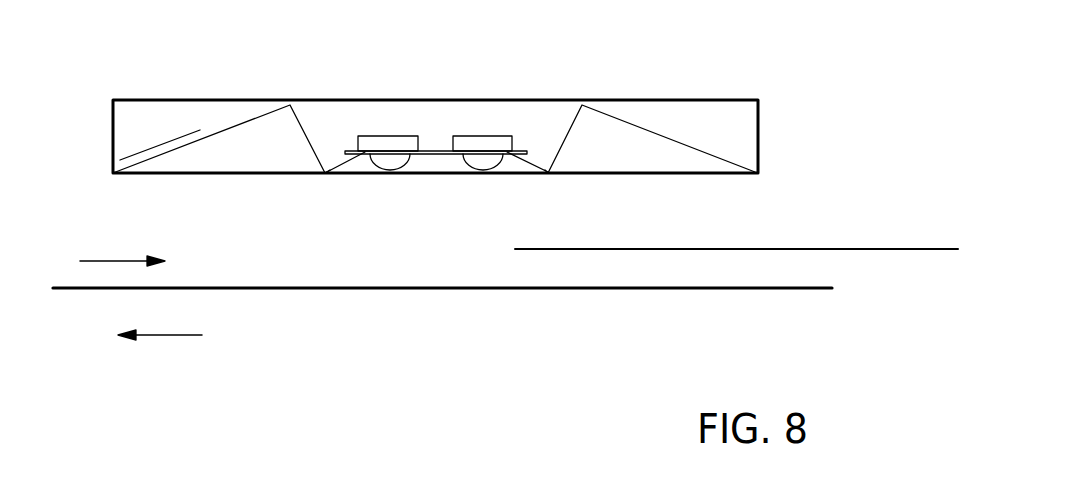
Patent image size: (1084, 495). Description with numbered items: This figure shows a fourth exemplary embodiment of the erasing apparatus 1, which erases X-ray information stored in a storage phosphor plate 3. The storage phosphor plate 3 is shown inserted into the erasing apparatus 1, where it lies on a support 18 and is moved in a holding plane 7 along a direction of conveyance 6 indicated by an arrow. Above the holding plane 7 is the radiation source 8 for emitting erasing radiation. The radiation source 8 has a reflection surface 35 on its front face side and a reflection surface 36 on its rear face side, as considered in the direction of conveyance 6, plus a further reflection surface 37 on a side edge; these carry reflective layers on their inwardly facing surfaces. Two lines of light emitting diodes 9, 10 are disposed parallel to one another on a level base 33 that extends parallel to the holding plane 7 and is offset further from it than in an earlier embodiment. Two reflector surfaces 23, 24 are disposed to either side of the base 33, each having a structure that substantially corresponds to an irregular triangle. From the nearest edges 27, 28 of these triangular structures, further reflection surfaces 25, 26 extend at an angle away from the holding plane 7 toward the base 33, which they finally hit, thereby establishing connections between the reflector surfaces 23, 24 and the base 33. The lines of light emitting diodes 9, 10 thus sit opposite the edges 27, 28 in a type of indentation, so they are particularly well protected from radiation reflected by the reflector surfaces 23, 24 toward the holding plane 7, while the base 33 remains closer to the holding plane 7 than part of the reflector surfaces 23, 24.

The erasing apparatus 1 is at (848, 180).
The storage phosphor plate 3 is at (878, 250).
The direction of conveyance 6 is at (167, 335).
The holding plane 7 is at (103, 261).
The radiation source 8 is at (553, 100).
The line of light emitting diodes 9 is at (383, 142).
The line of light emitting diodes 10 is at (500, 142).
The support 18 is at (522, 290).
The reflector surface 23 is at (258, 117).
The reflector surface 24 is at (625, 116).
The further reflection surface 25 is at (346, 173).
The further reflection surface 26 is at (527, 173).
The nearest edge 27 is at (327, 173).
The nearest edge 28 is at (547, 173).
The base 33 is at (433, 154).
The reflection surface 35 is at (113, 132).
The reflection surface 36 is at (759, 127).
The further reflection surface 37 is at (156, 110).